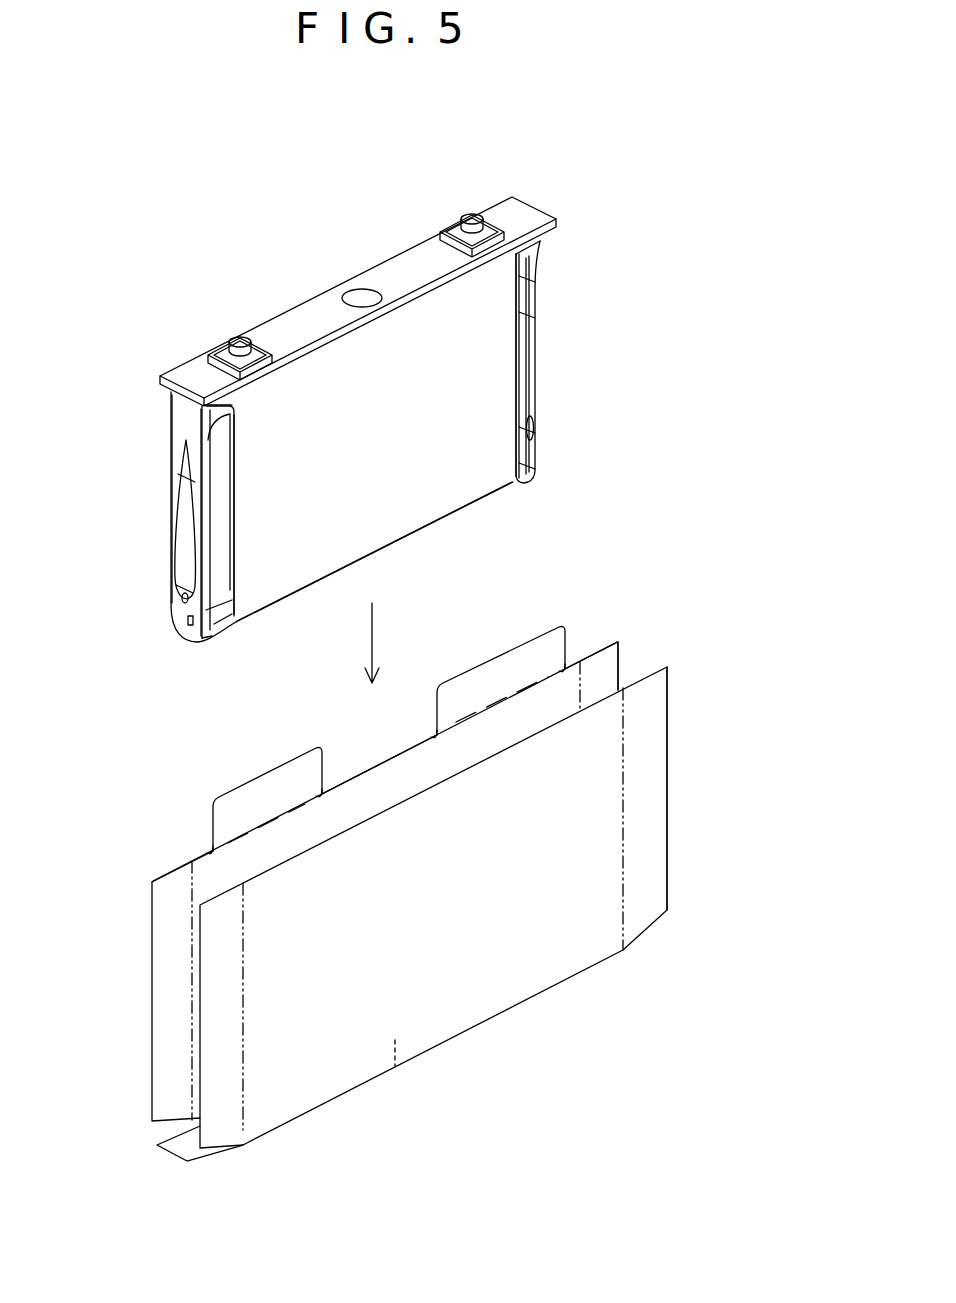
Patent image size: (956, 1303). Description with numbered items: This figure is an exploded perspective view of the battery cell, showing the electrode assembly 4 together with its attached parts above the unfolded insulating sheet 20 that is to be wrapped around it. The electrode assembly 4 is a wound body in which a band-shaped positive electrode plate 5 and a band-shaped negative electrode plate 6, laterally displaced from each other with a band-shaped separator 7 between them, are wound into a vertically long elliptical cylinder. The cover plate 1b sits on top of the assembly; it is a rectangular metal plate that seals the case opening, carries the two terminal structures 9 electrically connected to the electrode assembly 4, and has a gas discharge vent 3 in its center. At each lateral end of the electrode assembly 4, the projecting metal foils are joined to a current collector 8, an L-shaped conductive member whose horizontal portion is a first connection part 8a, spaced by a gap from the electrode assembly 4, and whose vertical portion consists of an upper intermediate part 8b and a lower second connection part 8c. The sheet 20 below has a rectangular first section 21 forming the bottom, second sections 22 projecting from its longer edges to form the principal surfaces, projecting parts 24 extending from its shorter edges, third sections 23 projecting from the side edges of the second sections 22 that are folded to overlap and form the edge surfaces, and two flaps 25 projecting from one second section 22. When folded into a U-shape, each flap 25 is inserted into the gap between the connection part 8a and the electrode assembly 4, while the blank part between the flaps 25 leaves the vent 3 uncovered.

The cover plate 1b is at (520, 212).
The terminal structure 9 is at (212, 320).
The gas discharge vent 3 is at (362, 299).
The electrode assembly 4 is at (555, 479).
The separator 7 is at (416, 496).
The current collector 8 is at (547, 356).
The first connection part 8a is at (258, 393).
The intermediate part 8b is at (183, 430).
The second connection part 8c is at (186, 526).
The positive electrode plate 5 is at (225, 602).
The negative electrode plate 6 is at (528, 452).
The sheet 20 is at (497, 1050).
The first section 21 is at (396, 1067).
The second section 22 is at (382, 778).
The third section 23 is at (605, 674).
The projecting part 24 is at (180, 1144).
The flap 25 is at (500, 680).